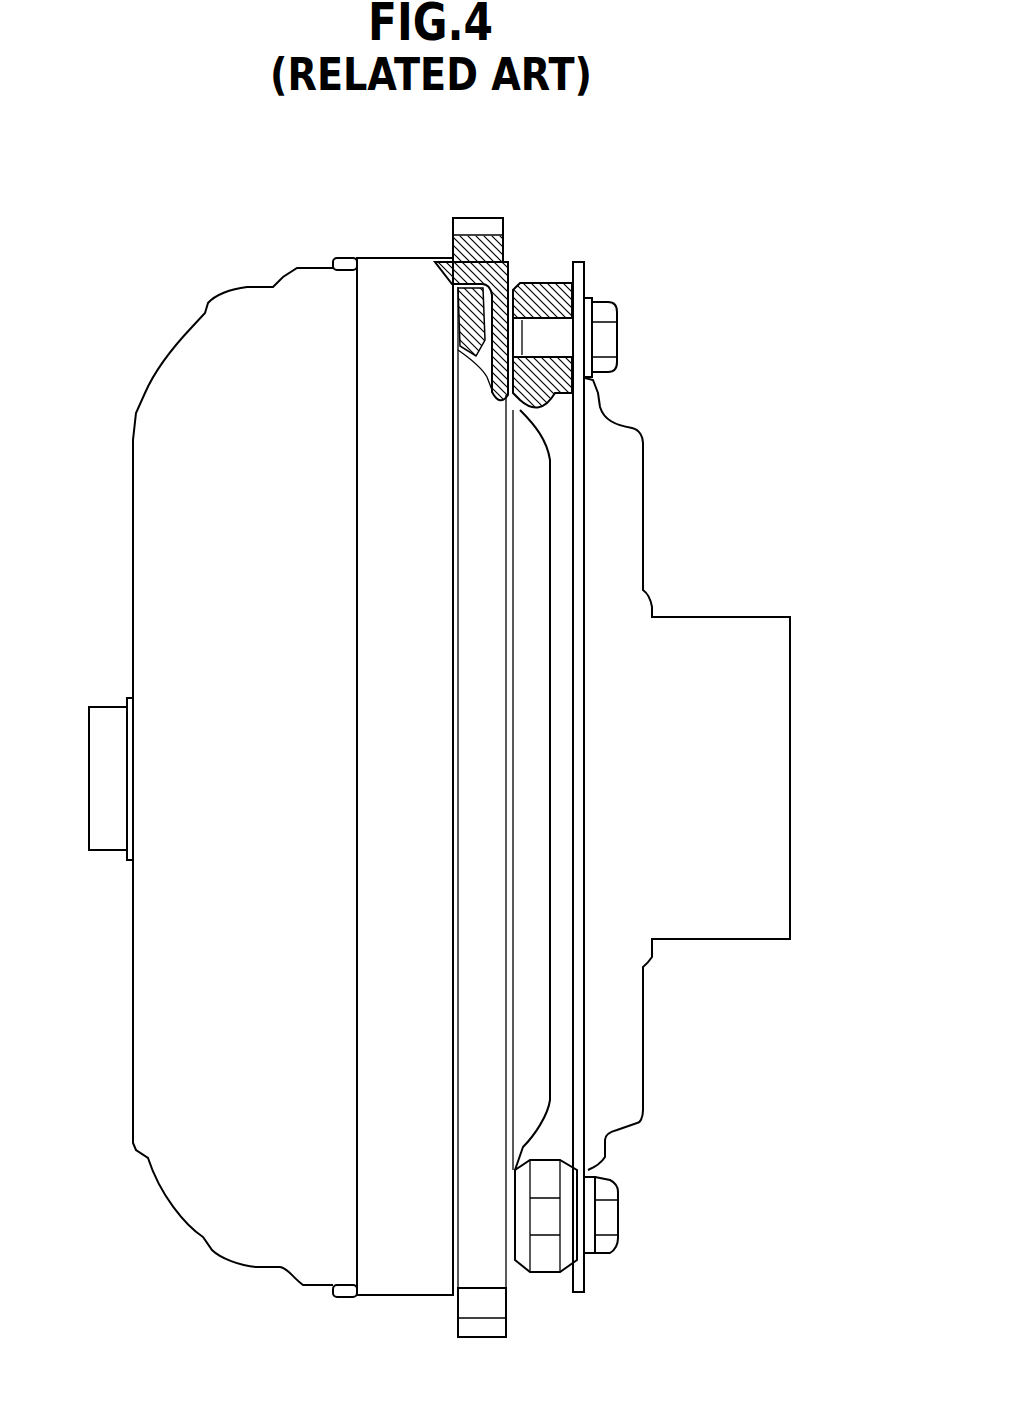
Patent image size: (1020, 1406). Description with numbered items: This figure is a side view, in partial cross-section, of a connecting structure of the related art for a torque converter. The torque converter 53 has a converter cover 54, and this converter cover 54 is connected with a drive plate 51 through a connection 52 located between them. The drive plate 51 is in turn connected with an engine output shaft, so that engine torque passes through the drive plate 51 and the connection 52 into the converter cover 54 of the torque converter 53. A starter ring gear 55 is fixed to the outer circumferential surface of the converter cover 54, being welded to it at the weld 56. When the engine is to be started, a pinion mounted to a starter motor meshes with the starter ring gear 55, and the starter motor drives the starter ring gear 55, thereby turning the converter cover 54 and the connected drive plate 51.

The drive plate 51 is at (627, 477).
The connection 52 is at (550, 288).
The torque converter 53 is at (248, 273).
The converter cover 54 is at (378, 270).
The starter ring gear 55 is at (483, 228).
The weld 56 is at (505, 262).